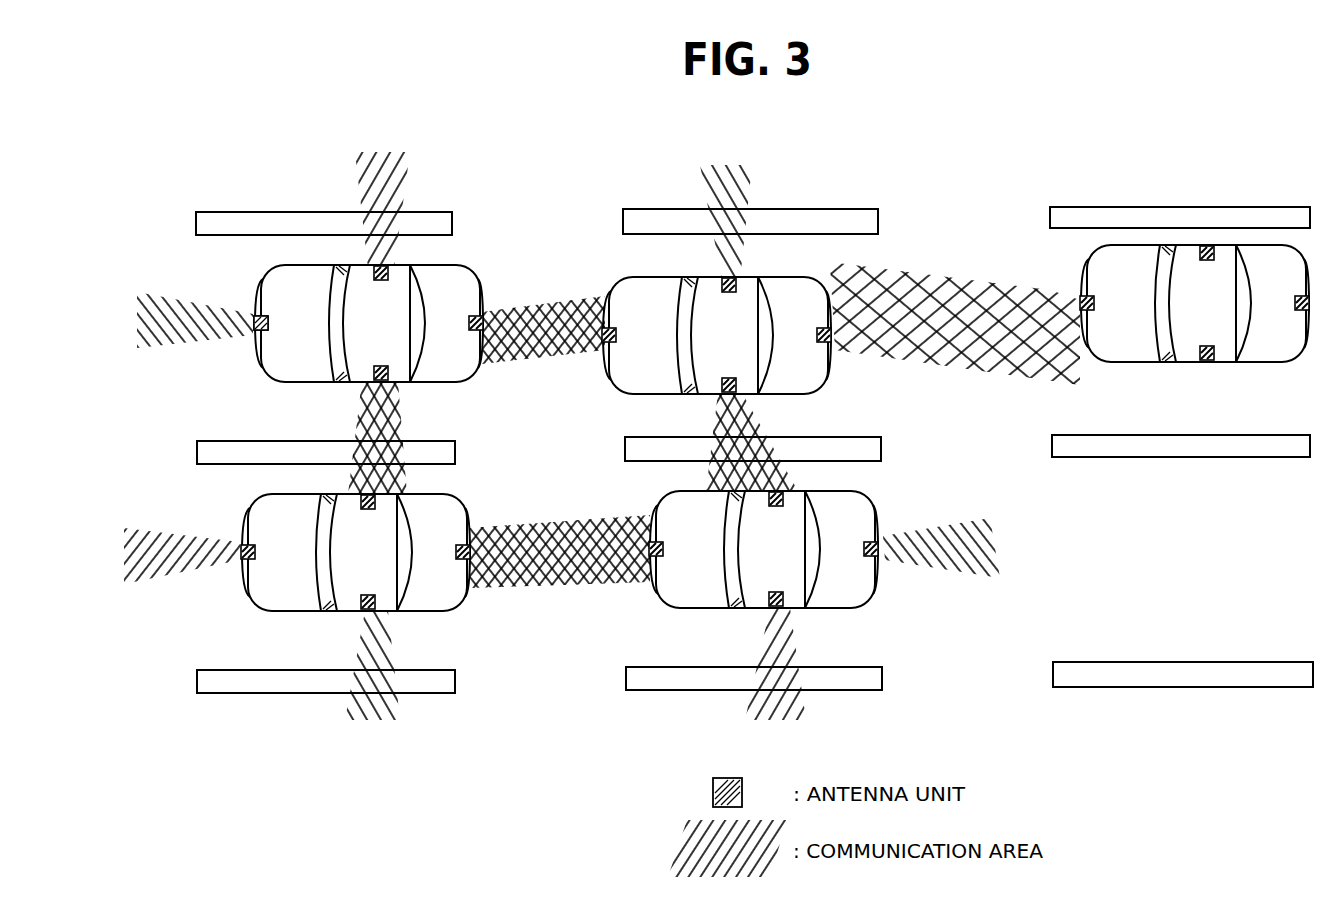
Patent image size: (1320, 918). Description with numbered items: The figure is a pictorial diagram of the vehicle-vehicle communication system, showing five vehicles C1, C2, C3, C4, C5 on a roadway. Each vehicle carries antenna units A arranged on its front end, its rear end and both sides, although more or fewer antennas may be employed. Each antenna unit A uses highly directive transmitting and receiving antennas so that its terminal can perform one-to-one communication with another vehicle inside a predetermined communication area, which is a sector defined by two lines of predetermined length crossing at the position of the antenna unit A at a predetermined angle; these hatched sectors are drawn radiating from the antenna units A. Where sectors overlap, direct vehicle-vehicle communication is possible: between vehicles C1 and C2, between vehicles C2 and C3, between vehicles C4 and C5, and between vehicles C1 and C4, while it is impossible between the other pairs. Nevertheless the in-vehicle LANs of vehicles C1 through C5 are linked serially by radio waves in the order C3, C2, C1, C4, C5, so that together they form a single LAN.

The vehicle C1 is at (441, 281).
The vehicle C2 is at (637, 373).
The vehicle C3 is at (1117, 347).
The vehicle C4 is at (427, 510).
The vehicle C5 is at (853, 508).
The antenna unit A is at (254, 320).